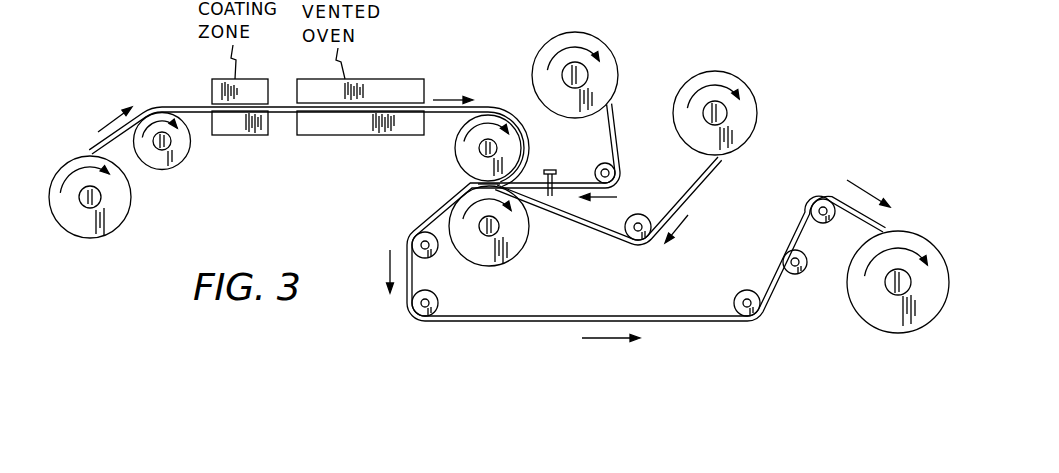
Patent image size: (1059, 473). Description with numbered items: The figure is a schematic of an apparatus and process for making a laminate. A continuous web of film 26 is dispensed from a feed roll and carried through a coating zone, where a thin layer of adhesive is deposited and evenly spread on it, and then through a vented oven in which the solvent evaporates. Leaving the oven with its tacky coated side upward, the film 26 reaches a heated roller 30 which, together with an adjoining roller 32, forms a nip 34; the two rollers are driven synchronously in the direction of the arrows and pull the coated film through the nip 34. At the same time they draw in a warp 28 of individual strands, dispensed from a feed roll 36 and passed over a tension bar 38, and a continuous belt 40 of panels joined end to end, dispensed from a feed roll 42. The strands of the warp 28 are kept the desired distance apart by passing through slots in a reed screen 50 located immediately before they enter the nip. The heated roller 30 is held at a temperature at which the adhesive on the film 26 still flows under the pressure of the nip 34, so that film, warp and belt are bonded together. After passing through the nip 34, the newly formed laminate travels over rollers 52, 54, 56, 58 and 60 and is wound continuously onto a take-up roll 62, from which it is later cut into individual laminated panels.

The continuous web of film 26 is at (190, 96).
The warp 28 is at (623, 168).
The heated roller 30 is at (488, 117).
The adjoining roller 32 is at (513, 250).
The nip 34 is at (455, 180).
The feed roll 36 is at (545, 57).
The tension bar 38 is at (600, 163).
The continuous belt 40 is at (700, 187).
The feed roll 42 is at (750, 120).
The reed screen 50 is at (552, 167).
The roller 52 is at (427, 250).
The roller 54 is at (437, 307).
The roller 56 is at (740, 297).
The roller 58 is at (795, 275).
The roller 60 is at (827, 223).
The take-up roll 62 is at (883, 322).